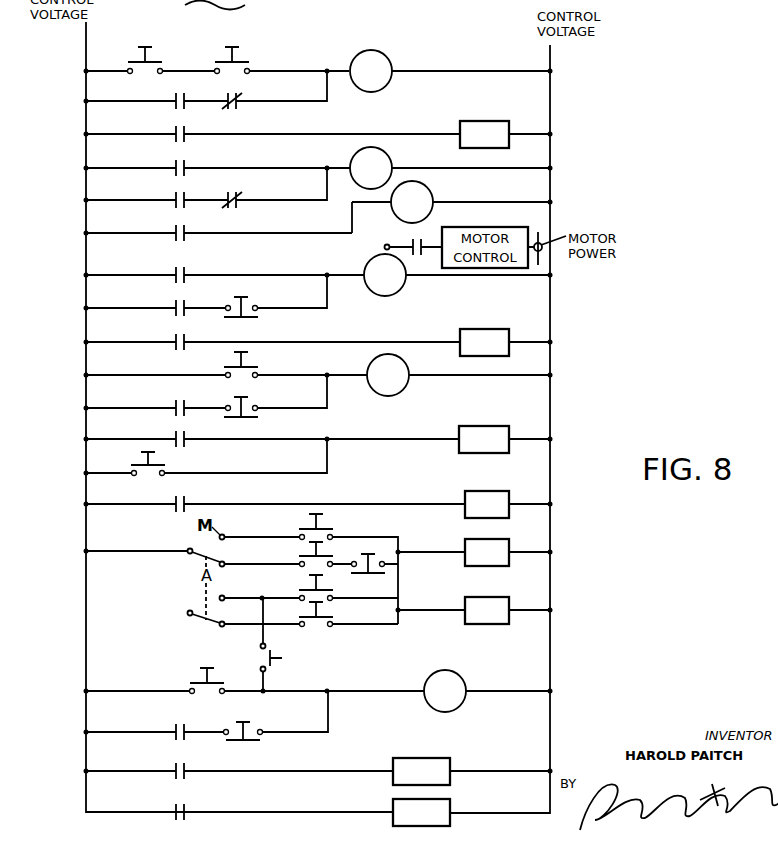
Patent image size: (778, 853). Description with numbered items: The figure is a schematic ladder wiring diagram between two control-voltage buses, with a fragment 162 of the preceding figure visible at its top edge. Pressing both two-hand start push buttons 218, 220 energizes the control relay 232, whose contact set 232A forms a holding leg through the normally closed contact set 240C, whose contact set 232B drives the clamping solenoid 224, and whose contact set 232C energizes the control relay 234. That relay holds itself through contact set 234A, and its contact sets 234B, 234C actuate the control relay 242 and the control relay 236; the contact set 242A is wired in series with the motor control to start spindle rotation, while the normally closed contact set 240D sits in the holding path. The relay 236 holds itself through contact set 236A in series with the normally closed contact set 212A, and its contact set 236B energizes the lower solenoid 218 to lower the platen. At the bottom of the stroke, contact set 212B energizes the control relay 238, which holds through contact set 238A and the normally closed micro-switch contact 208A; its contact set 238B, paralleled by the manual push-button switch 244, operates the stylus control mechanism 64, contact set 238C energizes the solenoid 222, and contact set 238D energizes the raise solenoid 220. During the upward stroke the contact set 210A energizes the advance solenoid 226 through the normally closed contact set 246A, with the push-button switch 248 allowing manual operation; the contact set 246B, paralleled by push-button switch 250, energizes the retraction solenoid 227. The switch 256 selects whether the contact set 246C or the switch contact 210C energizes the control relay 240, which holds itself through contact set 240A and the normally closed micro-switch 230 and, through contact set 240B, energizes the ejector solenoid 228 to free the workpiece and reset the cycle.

The component of preceding figure 162 is at (388, 0).
The start push button / lower solenoid 218 is at (141, 48).
The start push button / raise solenoid 220 is at (232, 48).
The control relay 232 is at (371, 71).
The contact set 232A is at (175, 98).
The contact set 232B is at (175, 132).
The contact set 232C is at (175, 165).
The contact set 240C is at (240, 101).
The solenoid 224 is at (484, 134).
The control relay 234 is at (371, 168).
The contact set 234A is at (175, 198).
The contact set 234B is at (175, 231).
The contact set 234C is at (175, 273).
The contact set 240D is at (240, 200).
The control relay 242 is at (412, 202).
The contact set 242A is at (413, 245).
The control relay 236 is at (385, 275).
The contact set 236A is at (175, 306).
The contact set 236B is at (175, 340).
The contact set 212A is at (248, 299).
The contact set 212B is at (248, 357).
The control relay 238 is at (388, 375).
The contact set 238A is at (175, 406).
The contact set 238B is at (175, 437).
The contact set 238C is at (175, 502).
The contact set 238D is at (175, 810).
The micro-switch contact 208A is at (248, 396).
The stylus control mechanism 64 is at (484, 439).
The push-button switch 244 is at (155, 452).
The solenoid 222 is at (487, 504).
The push-button switch 248 is at (324, 520).
The contact set 210A is at (306, 544).
The contact set 246A is at (380, 573).
The advance solenoid 226 is at (487, 552).
The switch 256 is at (204, 594).
The push-button switch 250 is at (299, 585).
The contact set 246B is at (334, 611).
The retraction solenoid 227 is at (487, 610).
The contact set 246C is at (198, 681).
The switch contact 210C is at (284, 658).
The control relay 240 is at (445, 691).
The contact set 240A is at (175, 730).
The contact set 240B is at (175, 769).
The micro-switch 230 is at (248, 721).
The ejector solenoid 228 is at (421, 771).